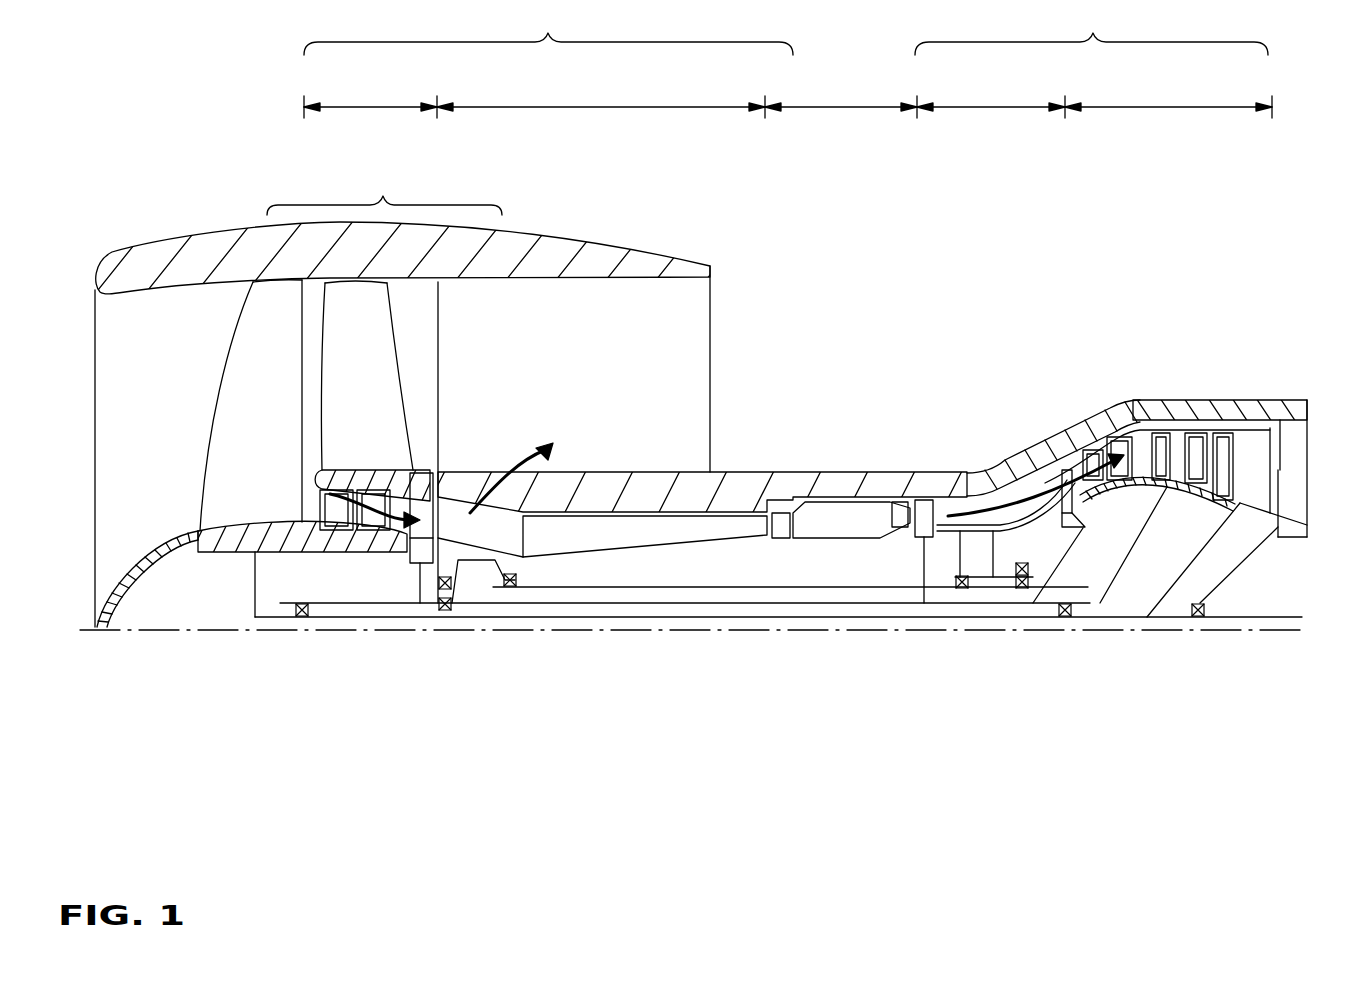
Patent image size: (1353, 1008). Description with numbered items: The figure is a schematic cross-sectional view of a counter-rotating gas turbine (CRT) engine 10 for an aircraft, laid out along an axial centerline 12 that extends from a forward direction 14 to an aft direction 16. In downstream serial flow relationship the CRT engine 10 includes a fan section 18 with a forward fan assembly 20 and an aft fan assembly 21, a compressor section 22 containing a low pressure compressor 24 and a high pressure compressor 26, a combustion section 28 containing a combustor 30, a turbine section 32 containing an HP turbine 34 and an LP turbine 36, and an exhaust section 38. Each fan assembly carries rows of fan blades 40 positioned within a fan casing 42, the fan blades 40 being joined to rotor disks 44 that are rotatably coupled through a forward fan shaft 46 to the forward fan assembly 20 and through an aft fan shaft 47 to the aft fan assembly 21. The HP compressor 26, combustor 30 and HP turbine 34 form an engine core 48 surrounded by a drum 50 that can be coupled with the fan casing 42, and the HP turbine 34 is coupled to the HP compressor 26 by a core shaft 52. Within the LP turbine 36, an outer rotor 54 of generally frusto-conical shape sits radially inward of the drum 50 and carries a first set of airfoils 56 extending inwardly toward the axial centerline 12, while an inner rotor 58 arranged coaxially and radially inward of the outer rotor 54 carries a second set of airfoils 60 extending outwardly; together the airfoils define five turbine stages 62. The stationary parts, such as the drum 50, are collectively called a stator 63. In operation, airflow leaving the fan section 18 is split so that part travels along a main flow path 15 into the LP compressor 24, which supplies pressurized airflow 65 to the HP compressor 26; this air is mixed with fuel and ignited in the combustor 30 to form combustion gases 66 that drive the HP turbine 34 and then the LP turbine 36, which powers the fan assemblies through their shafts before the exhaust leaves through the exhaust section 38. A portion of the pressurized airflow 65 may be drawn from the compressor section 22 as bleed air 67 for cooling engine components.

The counter-rotating gas turbine (CRT) engine 10 is at (1104, 290).
The axial centerline 12 is at (135, 633).
The forward direction 14 is at (89, 560).
The main flow path 15 is at (662, 518).
The aft direction 16 is at (1312, 580).
The fan section 18 is at (383, 195).
The forward fan assembly 20 is at (223, 364).
The aft fan assembly 21 is at (405, 376).
The compressor section 22 is at (550, 33).
The low pressure (LP) compressor 24 is at (358, 107).
The high pressure (HP) compressor 26 is at (583, 107).
The combustion section 28 is at (828, 107).
The combustor 30 is at (850, 532).
The turbine section 32 is at (1093, 32).
The HP turbine 34 is at (978, 107).
The LP turbine 36 is at (1140, 107).
The exhaust section 38 is at (1322, 403).
The fan blades 40 is at (282, 417).
The fan casing 42 is at (600, 240).
The rotor disks 44 is at (330, 470).
The forward fan shaft 46 is at (333, 603).
The aft fan shaft 47 is at (482, 598).
The engine core 48 is at (752, 558).
The drum 50 is at (1058, 442).
The core rotor or shaft 52 is at (812, 588).
The outer rotor 54 is at (1150, 425).
The first set of airfoils 56 is at (1175, 435).
The inner rotor 58 is at (1182, 490).
The second set of airfoils 60 is at (1123, 480).
The turbine stages 62 is at (1070, 408).
The stator 63 is at (760, 478).
The pressurized airflow 65 is at (398, 530).
The combustion gases 66 is at (970, 495).
The bleed air 67 is at (532, 513).